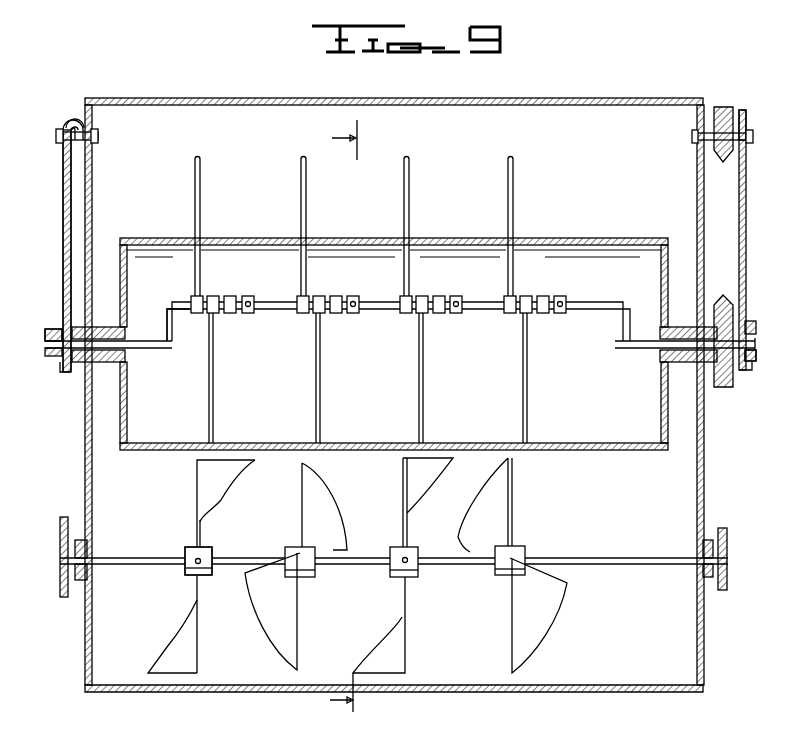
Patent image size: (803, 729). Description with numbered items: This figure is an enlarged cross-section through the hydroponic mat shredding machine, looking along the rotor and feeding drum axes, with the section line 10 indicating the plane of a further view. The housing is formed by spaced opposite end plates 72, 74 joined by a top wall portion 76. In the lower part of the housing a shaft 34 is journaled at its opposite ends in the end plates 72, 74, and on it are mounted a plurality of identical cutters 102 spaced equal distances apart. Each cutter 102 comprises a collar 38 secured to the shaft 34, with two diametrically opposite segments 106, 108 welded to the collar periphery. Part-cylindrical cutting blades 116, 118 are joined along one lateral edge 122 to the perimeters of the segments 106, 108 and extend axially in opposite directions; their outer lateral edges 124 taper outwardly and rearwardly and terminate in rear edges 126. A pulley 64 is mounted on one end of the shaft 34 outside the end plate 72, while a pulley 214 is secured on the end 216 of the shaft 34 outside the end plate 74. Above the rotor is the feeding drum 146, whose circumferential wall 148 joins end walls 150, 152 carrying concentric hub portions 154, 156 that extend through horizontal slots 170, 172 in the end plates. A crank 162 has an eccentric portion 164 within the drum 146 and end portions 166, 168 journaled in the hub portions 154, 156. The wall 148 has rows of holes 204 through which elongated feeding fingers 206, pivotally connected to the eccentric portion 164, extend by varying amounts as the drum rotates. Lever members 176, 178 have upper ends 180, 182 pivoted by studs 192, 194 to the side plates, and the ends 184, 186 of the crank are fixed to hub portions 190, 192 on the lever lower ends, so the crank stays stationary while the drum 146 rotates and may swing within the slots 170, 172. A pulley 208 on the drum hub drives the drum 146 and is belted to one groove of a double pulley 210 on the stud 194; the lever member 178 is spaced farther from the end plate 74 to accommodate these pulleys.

The section line 10- 10 is at (334, 416).
The shaft 34 is at (100, 553).
The collar 38 is at (186, 576).
The pulley 64 is at (58, 579).
The end plate 72 is at (82, 448).
The end plate 74 is at (705, 440).
The top wall portion 76 is at (508, 100).
The cutter 102 is at (343, 563).
The segment 106 is at (192, 534).
The segment 108 is at (201, 602).
The cutting blade 116 is at (237, 477).
The cutting blade 118 is at (165, 645).
The lateral edge 122 is at (195, 462).
The outer lateral edge 124 is at (234, 498).
The rear edge 126 is at (73, 580).
The feeding drum 146 is at (394, 316).
The circumferential wall 148 is at (141, 238).
The end wall 150 is at (128, 272).
The end wall 152 is at (660, 269).
The hub portion 154 is at (107, 363).
The hub portion 156 is at (686, 362).
The crank 162 is at (158, 352).
The eccentric portion 164 is at (382, 304).
The end portion 166 is at (148, 338).
The end portion 168 is at (637, 348).
The slot 170 is at (86, 324).
The slot 172 is at (694, 327).
The lever member 176 is at (62, 247).
The lever member 178 is at (747, 205).
The upper end 180 is at (84, 119).
The upper end 182 is at (745, 115).
The end 184 is at (45, 348).
The end 186 is at (755, 349).
The hub portion 190 is at (47, 336).
The stud 192 is at (68, 144).
The stud 194 is at (704, 130).
The holes 204 is at (200, 250).
The feeding fingers 206 is at (201, 173).
The pulley 208 is at (722, 298).
The double pulley 210 is at (730, 165).
The pulley 214 is at (728, 538).
The end 216 is at (730, 565).